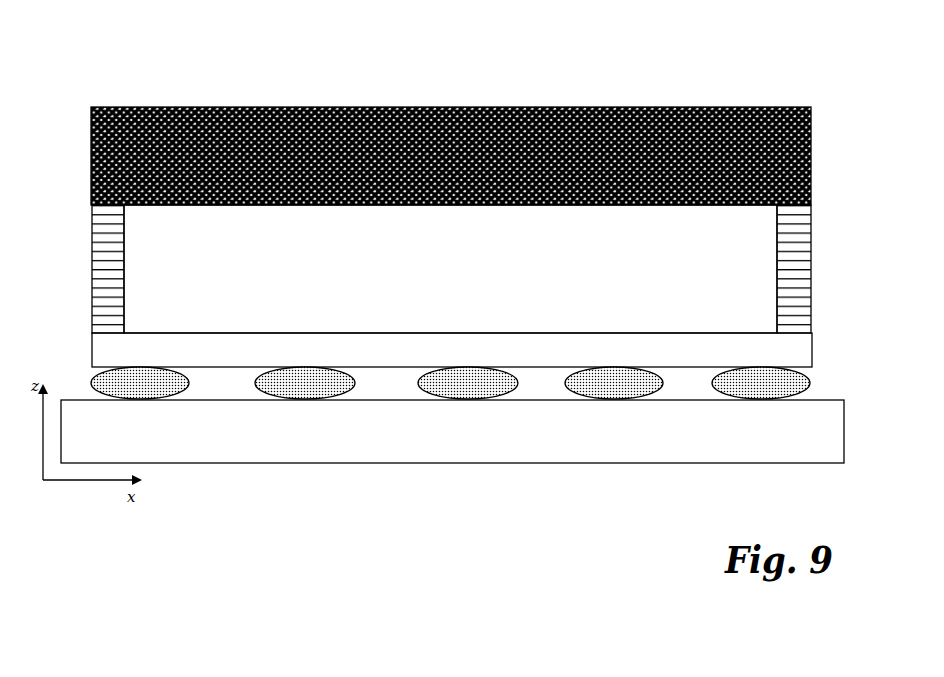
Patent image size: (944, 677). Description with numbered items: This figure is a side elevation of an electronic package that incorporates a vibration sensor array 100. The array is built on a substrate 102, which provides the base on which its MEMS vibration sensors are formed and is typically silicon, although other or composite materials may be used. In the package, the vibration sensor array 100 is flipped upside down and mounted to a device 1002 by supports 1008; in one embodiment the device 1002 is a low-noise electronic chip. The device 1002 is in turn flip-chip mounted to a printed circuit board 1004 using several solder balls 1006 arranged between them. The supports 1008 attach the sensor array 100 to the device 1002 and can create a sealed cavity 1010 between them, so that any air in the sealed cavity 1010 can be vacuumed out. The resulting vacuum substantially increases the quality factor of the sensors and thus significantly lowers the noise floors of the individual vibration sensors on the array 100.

The vibration sensor array 100 is at (451, 215).
The substrate 102 is at (451, 156).
The device 1002 is at (452, 350).
The printed circuit board 1004 is at (452, 431).
The solder balls 1006 is at (450, 383).
The supports 1008 is at (100, 268).
The sealed cavity 1010 is at (450, 269).